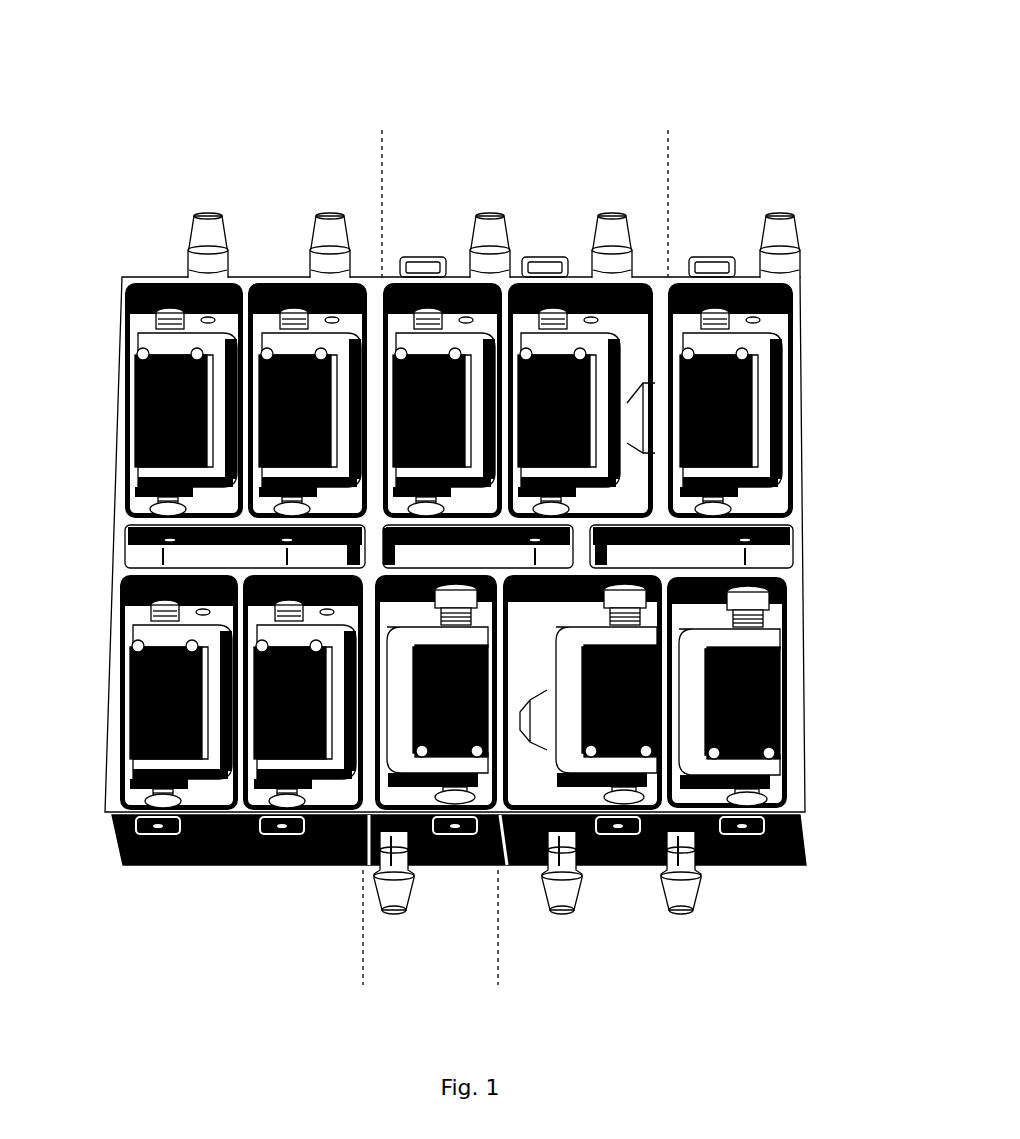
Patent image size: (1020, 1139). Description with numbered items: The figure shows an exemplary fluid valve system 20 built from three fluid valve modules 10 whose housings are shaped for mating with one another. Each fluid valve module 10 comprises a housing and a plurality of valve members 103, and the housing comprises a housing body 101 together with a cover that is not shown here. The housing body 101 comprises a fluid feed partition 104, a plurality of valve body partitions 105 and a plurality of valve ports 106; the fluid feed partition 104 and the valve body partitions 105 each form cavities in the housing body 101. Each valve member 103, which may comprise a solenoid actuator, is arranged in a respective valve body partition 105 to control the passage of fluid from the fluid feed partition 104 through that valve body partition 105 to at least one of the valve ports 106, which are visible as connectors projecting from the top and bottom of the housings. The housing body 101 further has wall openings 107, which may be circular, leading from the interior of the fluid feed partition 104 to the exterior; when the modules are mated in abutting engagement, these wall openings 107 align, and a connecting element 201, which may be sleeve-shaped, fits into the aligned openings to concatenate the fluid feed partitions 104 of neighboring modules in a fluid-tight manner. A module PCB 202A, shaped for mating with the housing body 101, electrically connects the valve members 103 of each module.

The fluid valve system 20 is at (740, 44).
The fluid valve module 10 is at (278, 155).
The housing body 101 is at (117, 410).
The valve member 103 is at (455, 553).
The fluid feed partition 104 is at (457, 553).
The valve body partition 105 is at (456, 558).
The valve port 106 is at (468, 566).
The wall opening 107 is at (117, 545).
The connecting element 201 is at (500, 548).
The module PCB 202A is at (243, 868).